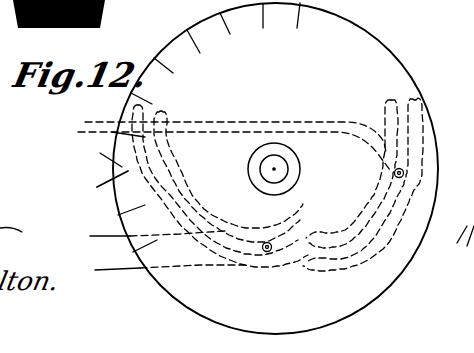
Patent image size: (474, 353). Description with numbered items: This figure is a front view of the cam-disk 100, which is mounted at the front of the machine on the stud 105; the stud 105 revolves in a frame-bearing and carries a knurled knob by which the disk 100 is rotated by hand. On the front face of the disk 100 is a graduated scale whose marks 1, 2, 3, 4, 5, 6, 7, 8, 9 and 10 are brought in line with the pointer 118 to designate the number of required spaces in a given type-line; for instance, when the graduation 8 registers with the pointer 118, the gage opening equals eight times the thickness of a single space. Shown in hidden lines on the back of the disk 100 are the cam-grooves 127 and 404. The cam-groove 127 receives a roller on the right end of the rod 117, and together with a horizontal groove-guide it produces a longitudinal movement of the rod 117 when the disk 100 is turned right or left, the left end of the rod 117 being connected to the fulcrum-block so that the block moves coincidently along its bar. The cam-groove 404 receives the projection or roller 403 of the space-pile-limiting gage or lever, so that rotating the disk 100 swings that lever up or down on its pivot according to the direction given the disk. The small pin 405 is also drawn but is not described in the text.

The cam-disk 100 is at (275, 168).
The graduation mark 1 is at (296, 25).
The graduation mark 2 is at (265, 25).
The graduation mark 3 is at (230, 33).
The graduation mark 4 is at (197, 48).
The graduation mark 5 is at (171, 74).
The graduation mark 6 is at (149, 105).
The graduation mark 7 is at (138, 141).
The graduation 8 is at (125, 170).
The graduation mark 9 is at (139, 205).
The graduation mark 10 is at (159, 239).
The rod 117 is at (234, 133).
The pointer 118 is at (112, 177).
The stud 105 is at (300, 167).
The cam-groove 404 is at (237, 186).
The projection or roller 403 is at (268, 252).
The pin 405 is at (401, 167).
The cam-groove 127 is at (362, 247).